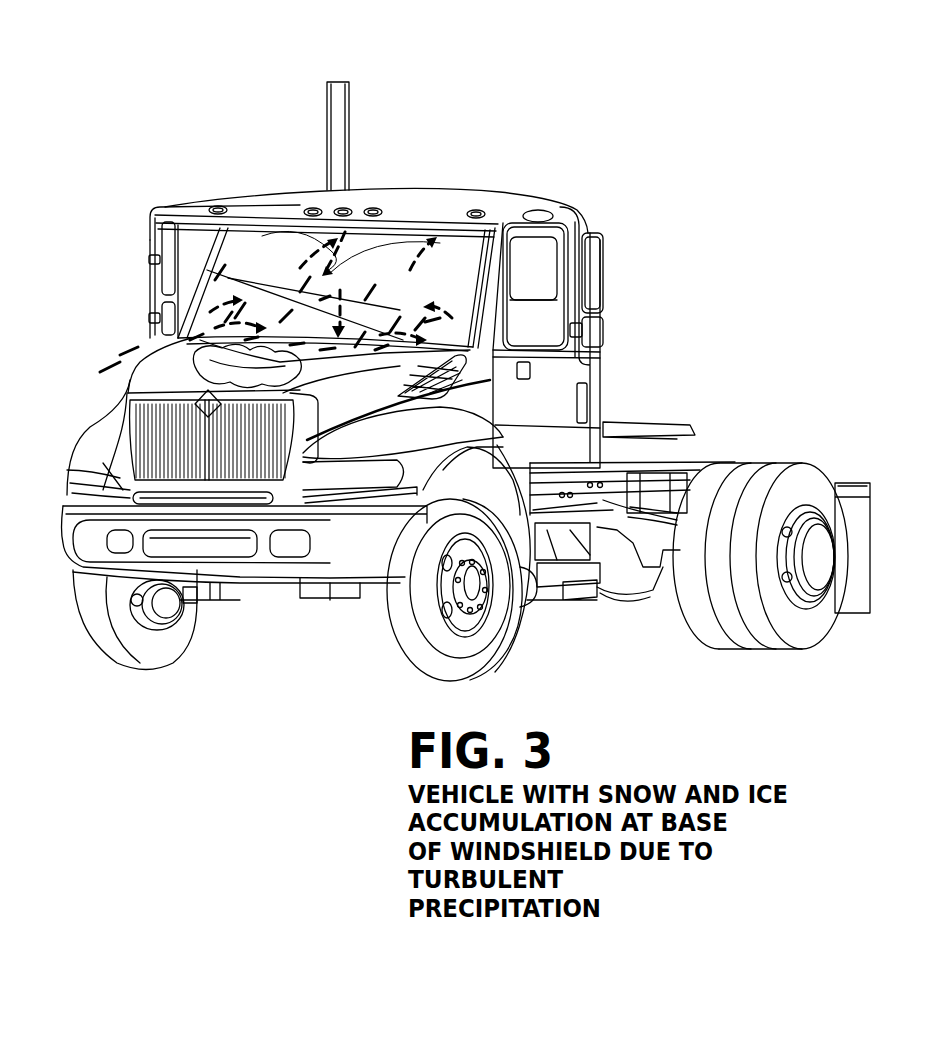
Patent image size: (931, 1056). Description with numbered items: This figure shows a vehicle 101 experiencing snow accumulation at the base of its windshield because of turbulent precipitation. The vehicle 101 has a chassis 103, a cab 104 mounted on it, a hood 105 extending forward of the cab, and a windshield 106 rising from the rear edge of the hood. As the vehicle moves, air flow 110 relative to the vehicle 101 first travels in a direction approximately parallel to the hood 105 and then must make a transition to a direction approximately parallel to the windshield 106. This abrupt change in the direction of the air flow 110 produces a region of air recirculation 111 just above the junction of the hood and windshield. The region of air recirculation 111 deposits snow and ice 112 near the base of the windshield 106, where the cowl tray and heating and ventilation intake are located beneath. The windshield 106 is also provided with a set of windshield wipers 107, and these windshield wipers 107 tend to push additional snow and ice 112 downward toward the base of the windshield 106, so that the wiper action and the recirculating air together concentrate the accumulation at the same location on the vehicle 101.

The vehicle 101 is at (505, 190).
The chassis 103 is at (718, 452).
The cab 104 is at (592, 204).
The hood 105 is at (112, 392).
The windshield 106 is at (226, 238).
The windshield wipers 107 is at (283, 290).
The air flow 110 is at (125, 345).
The region of air recirculation 111 is at (403, 340).
The snow and ice 112 is at (400, 350).